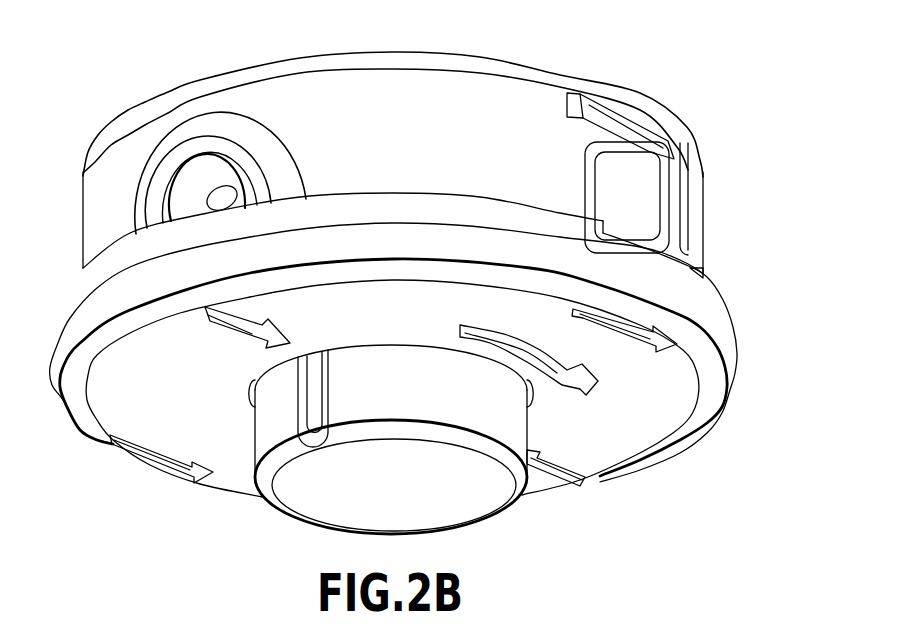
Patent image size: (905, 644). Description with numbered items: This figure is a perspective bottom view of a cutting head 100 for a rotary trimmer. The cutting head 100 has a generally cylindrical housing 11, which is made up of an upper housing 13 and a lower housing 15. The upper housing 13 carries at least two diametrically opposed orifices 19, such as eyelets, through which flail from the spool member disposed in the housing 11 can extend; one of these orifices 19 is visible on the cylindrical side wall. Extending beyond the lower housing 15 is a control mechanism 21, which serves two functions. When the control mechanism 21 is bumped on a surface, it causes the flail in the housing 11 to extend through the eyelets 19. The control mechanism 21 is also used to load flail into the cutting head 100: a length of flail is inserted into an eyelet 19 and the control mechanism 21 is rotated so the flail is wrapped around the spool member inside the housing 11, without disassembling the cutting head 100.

The housing 11 is at (138, 94).
The upper housing 13 is at (83, 224).
The lower housing 15 is at (91, 437).
The orifices 19 is at (220, 197).
The control mechanism 21 is at (505, 514).
The cutting head 100 is at (690, 94).